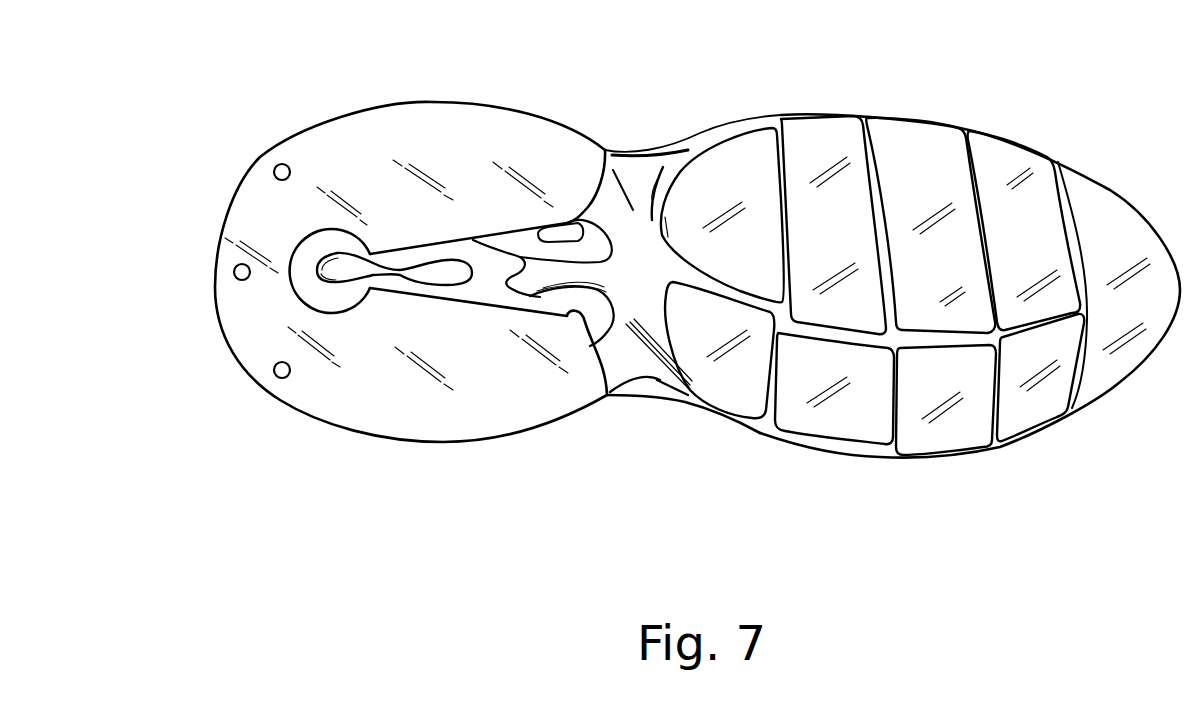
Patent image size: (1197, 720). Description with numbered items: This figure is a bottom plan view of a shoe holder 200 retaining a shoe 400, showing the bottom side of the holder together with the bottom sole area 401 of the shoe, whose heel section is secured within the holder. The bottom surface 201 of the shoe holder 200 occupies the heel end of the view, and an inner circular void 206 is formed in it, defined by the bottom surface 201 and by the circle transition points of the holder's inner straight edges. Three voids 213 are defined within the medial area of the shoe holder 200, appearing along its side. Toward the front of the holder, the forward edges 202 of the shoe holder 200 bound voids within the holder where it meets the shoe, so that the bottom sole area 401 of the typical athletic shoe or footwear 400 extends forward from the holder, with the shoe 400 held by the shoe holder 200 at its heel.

The shoe holder 200 is at (515, 91).
The bottom surface of shoe holder 201 is at (521, 393).
The forward edges of shoe holder 202 is at (603, 187).
The inner circular void 206 is at (342, 257).
The voids defined within medial area of the shoe holder 213 is at (273, 172).
The athletic shoe or footwear 400 is at (1032, 111).
The bottom sole area of shoe 401 is at (852, 241).